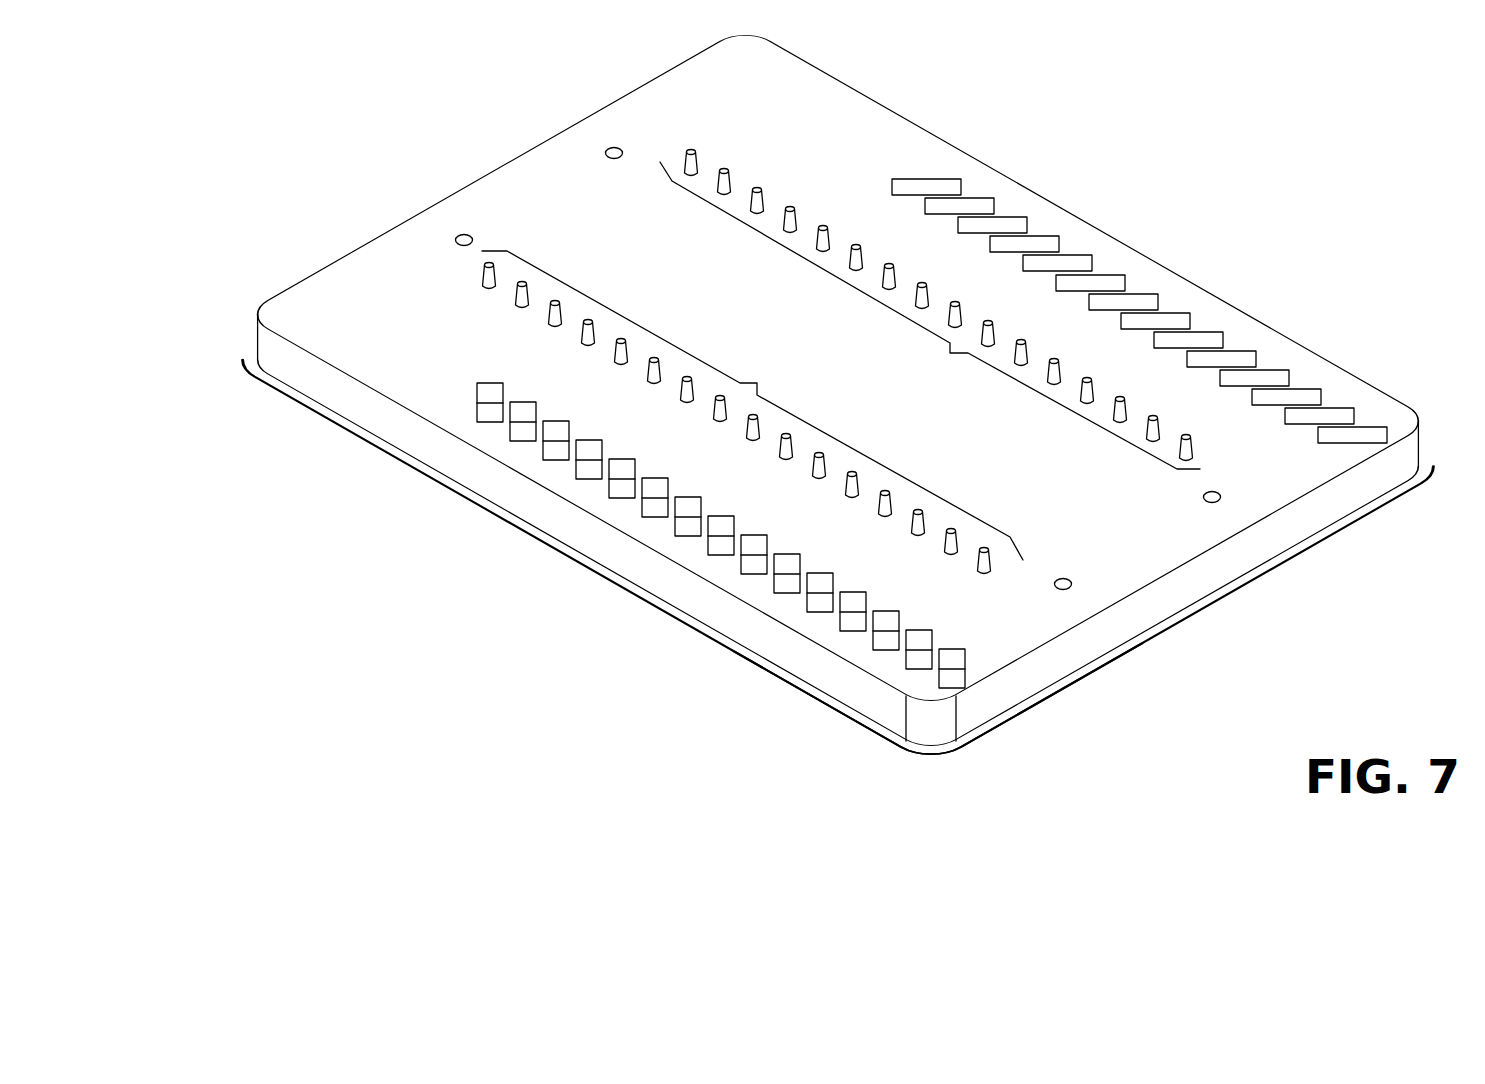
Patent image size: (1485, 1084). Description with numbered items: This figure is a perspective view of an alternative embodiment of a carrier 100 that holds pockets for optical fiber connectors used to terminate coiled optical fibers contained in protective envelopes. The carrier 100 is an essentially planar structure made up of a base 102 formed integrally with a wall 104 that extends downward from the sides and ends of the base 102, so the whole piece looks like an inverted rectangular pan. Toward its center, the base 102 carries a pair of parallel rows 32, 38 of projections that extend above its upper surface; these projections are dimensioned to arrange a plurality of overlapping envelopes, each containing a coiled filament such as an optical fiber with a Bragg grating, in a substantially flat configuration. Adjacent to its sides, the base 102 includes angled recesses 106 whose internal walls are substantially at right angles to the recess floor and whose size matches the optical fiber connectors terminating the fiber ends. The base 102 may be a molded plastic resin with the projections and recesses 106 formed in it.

The carrier 100 is at (1226, 199).
The base 102 is at (1135, 545).
The wall 104 is at (1040, 673).
The row of projections 32 is at (752, 412).
The row of projections 38 is at (930, 310).
The angled recesses 106 is at (720, 542).